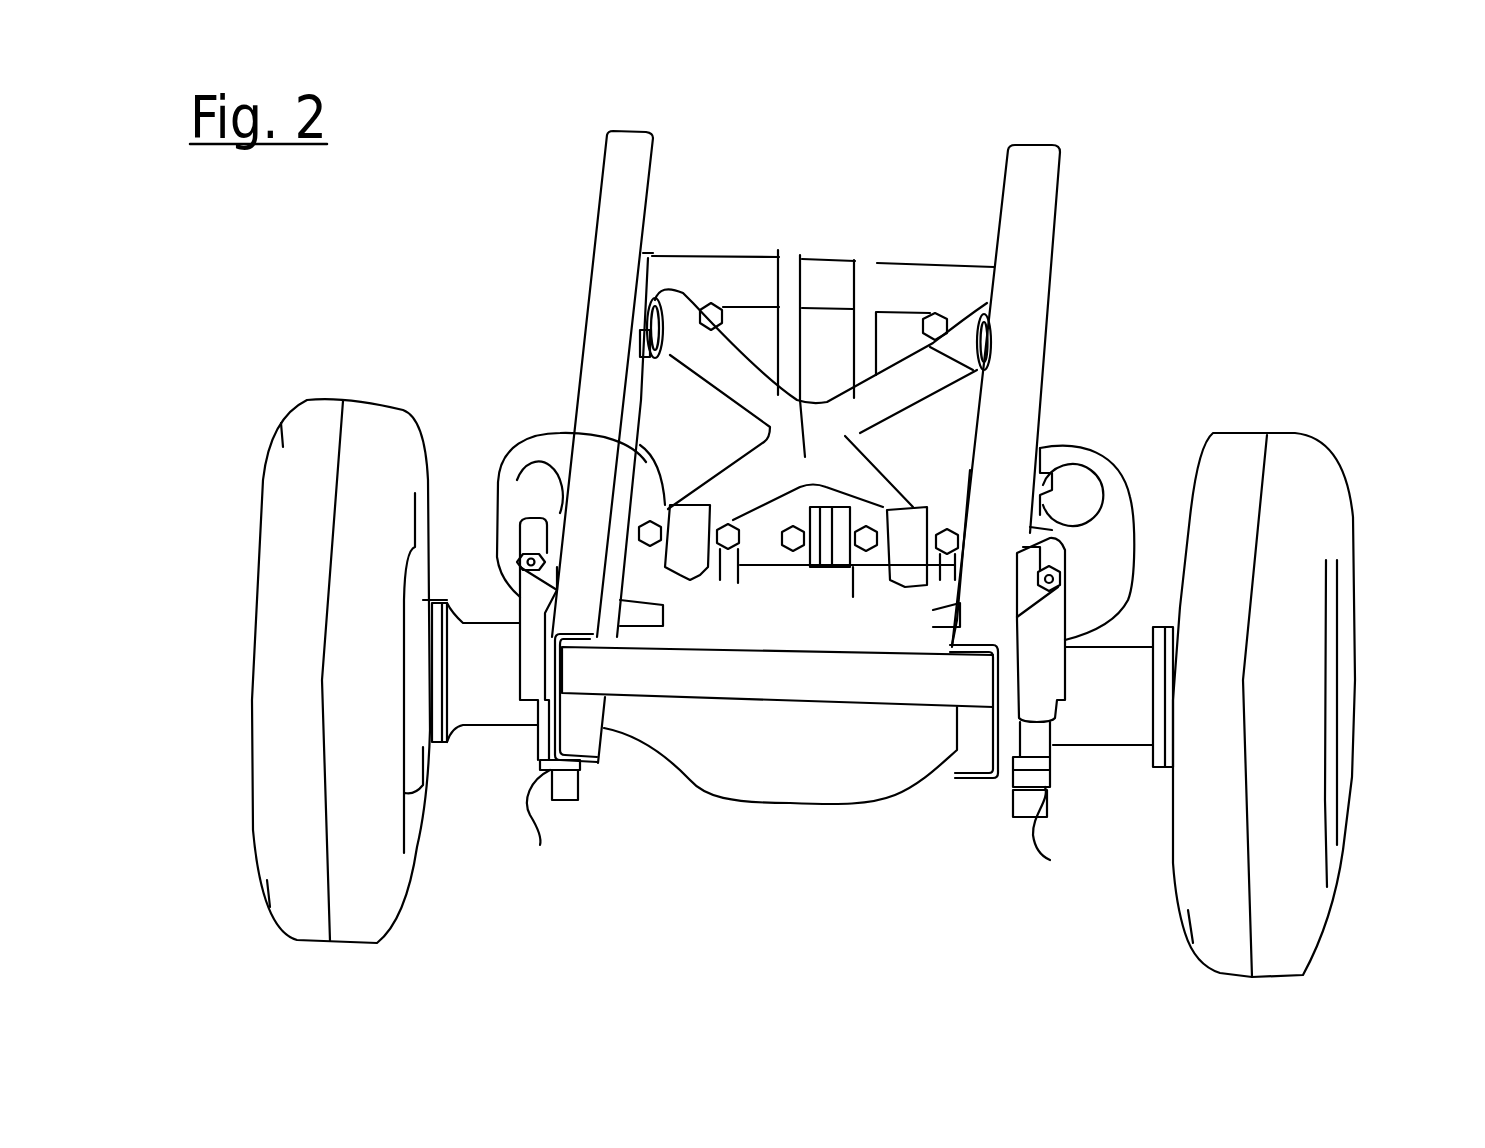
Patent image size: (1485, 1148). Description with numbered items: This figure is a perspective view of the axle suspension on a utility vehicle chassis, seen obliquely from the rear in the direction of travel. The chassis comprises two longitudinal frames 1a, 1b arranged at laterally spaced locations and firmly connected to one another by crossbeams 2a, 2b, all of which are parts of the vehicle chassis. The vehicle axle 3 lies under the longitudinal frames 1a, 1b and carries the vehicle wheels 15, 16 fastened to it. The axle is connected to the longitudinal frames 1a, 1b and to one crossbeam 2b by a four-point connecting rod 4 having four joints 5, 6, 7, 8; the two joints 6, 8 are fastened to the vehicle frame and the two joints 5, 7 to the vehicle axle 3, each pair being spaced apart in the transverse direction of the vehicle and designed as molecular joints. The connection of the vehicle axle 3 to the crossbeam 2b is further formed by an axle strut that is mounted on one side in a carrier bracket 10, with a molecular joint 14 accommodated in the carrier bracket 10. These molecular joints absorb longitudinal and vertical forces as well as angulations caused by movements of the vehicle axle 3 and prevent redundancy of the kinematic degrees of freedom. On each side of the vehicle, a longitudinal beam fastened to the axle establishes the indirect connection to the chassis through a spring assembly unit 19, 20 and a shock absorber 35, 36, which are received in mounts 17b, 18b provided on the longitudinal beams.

The longitudinal frame 1a is at (628, 170).
The longitudinal frame 1b is at (1020, 193).
The crossbeam 2a is at (697, 662).
The crossbeam 2b is at (760, 283).
The vehicle axle 3 is at (850, 750).
The four-point connecting rod 4 is at (833, 428).
The joint 5 is at (668, 507).
The joint 6 is at (668, 312).
The joint 7 is at (897, 530).
The joint 8 is at (993, 308).
The carrier bracket 10 is at (800, 340).
The molecular joint 14 is at (813, 567).
The vehicle wheel 15 is at (1290, 478).
The vehicle wheel 16 is at (318, 458).
The mount 17b is at (536, 835).
The mount 18b is at (1075, 835).
The spring assembly unit 19 is at (1102, 530).
The spring assembly unit 20 is at (505, 507).
The shock absorber 35 is at (1037, 658).
The shock absorber 36 is at (533, 610).